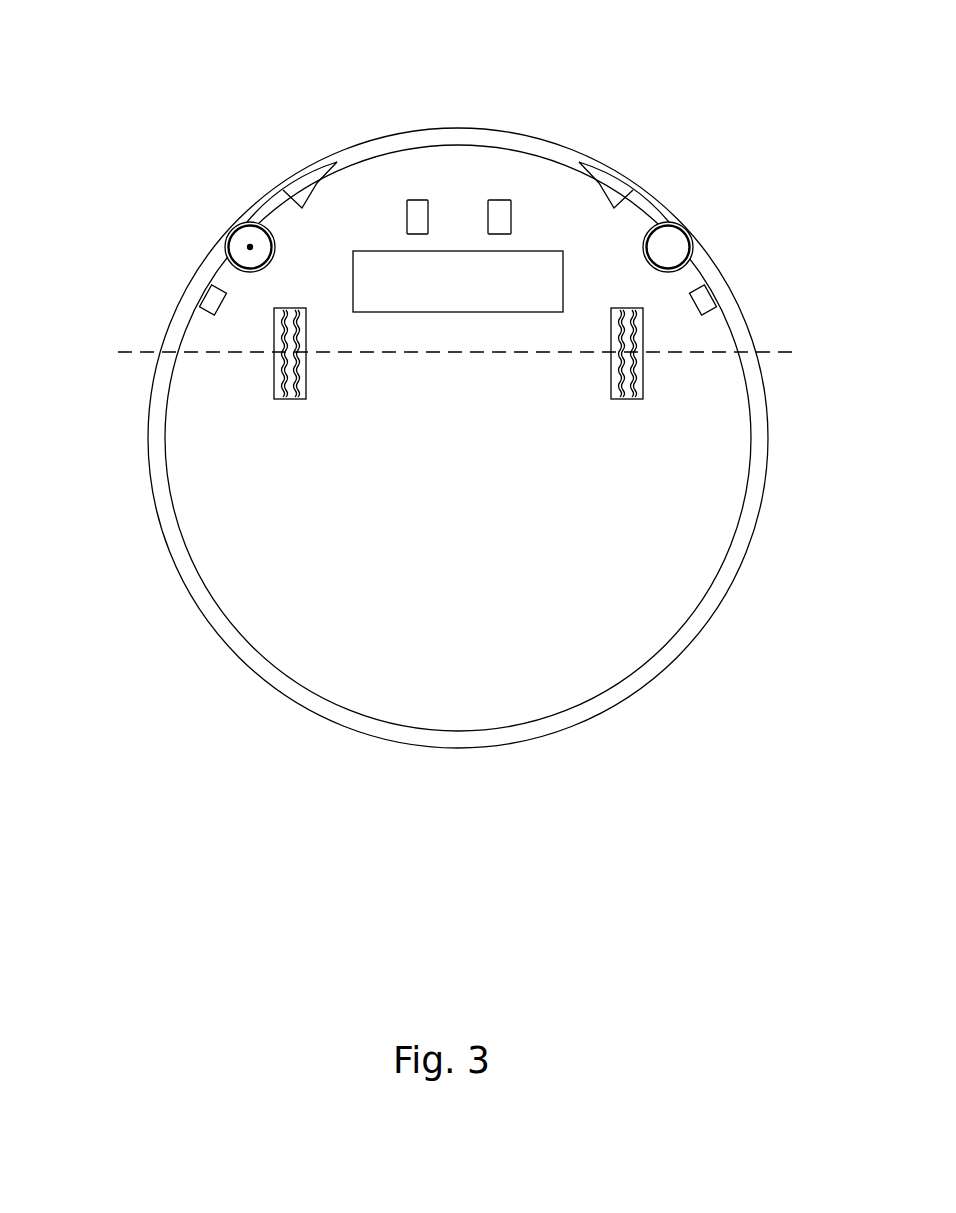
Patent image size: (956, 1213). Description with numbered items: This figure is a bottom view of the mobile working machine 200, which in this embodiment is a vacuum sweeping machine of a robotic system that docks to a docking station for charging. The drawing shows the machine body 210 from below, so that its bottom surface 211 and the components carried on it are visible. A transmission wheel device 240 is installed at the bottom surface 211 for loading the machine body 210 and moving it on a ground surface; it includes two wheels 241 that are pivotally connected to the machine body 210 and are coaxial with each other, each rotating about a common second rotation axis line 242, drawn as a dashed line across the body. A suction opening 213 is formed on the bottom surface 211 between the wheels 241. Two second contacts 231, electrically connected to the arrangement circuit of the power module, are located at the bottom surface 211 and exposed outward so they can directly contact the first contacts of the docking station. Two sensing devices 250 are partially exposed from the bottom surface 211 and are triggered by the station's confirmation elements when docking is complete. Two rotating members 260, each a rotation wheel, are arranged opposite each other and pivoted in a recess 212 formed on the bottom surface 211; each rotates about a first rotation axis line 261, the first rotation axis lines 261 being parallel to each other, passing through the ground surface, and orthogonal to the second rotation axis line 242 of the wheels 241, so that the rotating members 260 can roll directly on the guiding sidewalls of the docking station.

The mobile working machine 200 is at (176, 32).
The machine body 210 is at (742, 543).
The bottom surface 211 is at (683, 567).
The recess 212 is at (258, 205).
The suction opening 213 is at (370, 265).
The second contacts 231 is at (497, 212).
The transmission wheel device 240 is at (411, 382).
The wheels 241 is at (274, 387).
The second rotation axis line 242 is at (425, 324).
The sensing devices 250 is at (210, 300).
The rotating members 260 is at (226, 245).
The first rotation axis line 261 is at (250, 247).